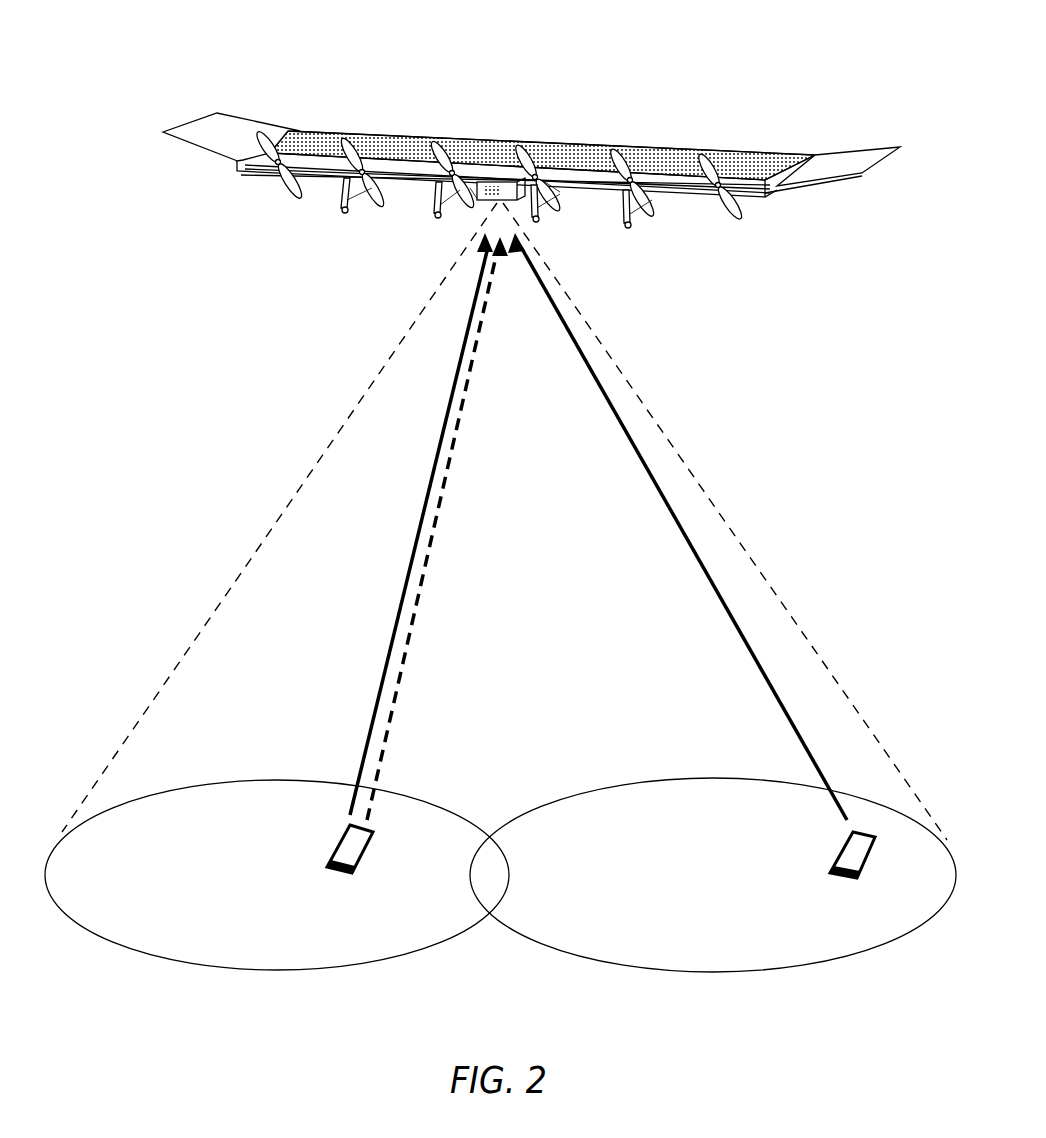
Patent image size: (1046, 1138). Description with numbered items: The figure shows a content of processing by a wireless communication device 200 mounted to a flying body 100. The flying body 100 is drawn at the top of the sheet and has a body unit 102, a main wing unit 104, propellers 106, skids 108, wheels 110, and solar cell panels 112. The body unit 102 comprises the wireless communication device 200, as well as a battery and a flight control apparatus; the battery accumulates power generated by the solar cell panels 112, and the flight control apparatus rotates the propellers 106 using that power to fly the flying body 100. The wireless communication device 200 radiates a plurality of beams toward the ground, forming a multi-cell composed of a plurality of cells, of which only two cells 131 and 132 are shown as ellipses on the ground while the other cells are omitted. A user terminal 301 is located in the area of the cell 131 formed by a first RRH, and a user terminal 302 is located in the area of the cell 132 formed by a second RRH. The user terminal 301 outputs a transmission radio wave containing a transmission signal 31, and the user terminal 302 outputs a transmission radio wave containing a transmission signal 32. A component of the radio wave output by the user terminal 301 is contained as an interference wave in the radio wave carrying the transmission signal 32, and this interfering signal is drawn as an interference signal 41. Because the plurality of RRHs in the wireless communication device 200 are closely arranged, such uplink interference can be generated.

The flying body 100 is at (190, 63).
The body unit 102 is at (465, 131).
The main wing unit 104 is at (240, 121).
The propellers 106 is at (286, 189).
The skids 108 is at (340, 194).
The wheels 110 is at (353, 208).
The solar cell panels 112 is at (327, 128).
The wireless communication device 200 is at (502, 158).
The transmission signal 31 is at (398, 587).
The transmission signal 32 is at (710, 590).
The interference signal 41 is at (420, 590).
The cell 131 is at (287, 787).
The cell 132 is at (703, 787).
The user terminal 301 is at (357, 862).
The user terminal 302 is at (865, 865).